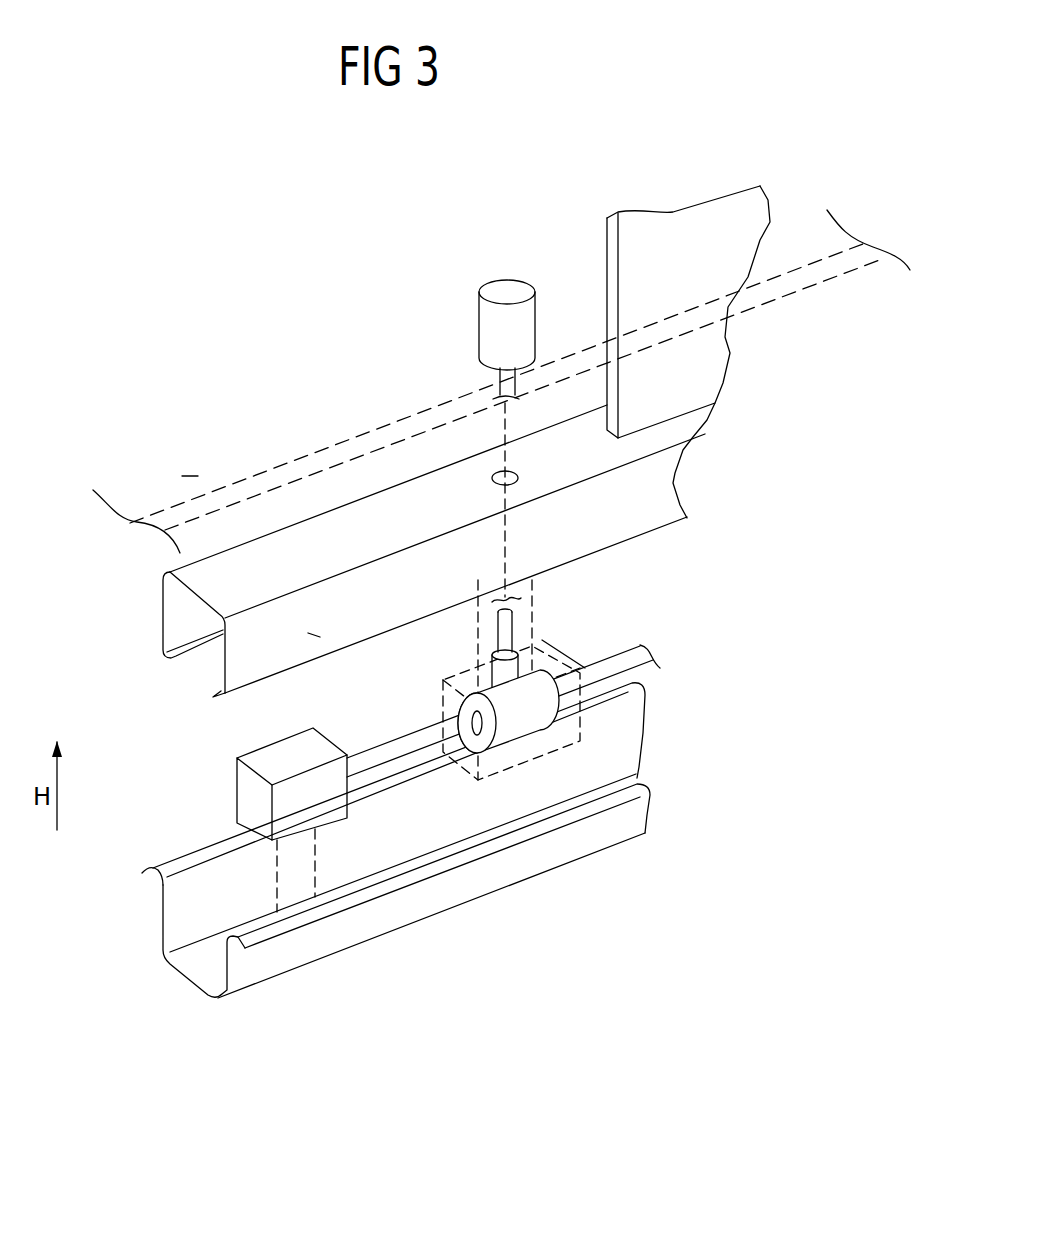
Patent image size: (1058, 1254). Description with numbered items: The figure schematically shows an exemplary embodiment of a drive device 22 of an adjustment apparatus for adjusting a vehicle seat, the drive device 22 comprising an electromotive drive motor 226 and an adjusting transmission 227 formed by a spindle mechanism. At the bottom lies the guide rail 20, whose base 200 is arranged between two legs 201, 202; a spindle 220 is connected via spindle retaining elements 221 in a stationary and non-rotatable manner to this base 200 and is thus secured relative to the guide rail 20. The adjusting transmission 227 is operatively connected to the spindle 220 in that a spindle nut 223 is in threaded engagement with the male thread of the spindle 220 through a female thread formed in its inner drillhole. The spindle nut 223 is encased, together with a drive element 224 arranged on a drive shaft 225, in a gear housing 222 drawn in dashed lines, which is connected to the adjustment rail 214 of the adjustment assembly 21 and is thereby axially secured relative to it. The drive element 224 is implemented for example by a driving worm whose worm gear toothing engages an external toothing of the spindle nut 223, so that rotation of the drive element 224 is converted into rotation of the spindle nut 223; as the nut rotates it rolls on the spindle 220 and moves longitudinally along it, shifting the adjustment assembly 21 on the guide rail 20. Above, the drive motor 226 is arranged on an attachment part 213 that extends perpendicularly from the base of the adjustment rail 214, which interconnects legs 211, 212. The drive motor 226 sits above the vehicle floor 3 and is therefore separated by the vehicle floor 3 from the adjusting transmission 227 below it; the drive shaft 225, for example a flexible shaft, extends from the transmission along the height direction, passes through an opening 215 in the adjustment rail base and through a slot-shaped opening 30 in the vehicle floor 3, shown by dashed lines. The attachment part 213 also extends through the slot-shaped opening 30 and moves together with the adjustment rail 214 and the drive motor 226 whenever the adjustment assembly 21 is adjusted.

The vehicle floor 3 is at (190, 464).
The guide rail 20 is at (265, 980).
The base 200 is at (187, 980).
The leg 201 is at (163, 933).
The leg 202 is at (317, 940).
The adjustment assembly 21 is at (225, 580).
The leg 211 is at (162, 623).
The leg 212 is at (320, 637).
The attachment part 213 is at (702, 353).
The adjustment rail 214 is at (187, 667).
The opening 215 is at (297, 543).
The drive device 22 is at (432, 407).
The spindle 220 is at (633, 655).
The spindle retaining element 221 is at (250, 802).
The gear housing 222 is at (570, 655).
The spindle nut 223 is at (520, 723).
The drive element 224 is at (492, 667).
The drive shaft 225 is at (503, 387).
The drive motor 226 is at (497, 332).
The adjusting transmission 227 is at (583, 743).
The slot-shaped opening 30 is at (802, 273).